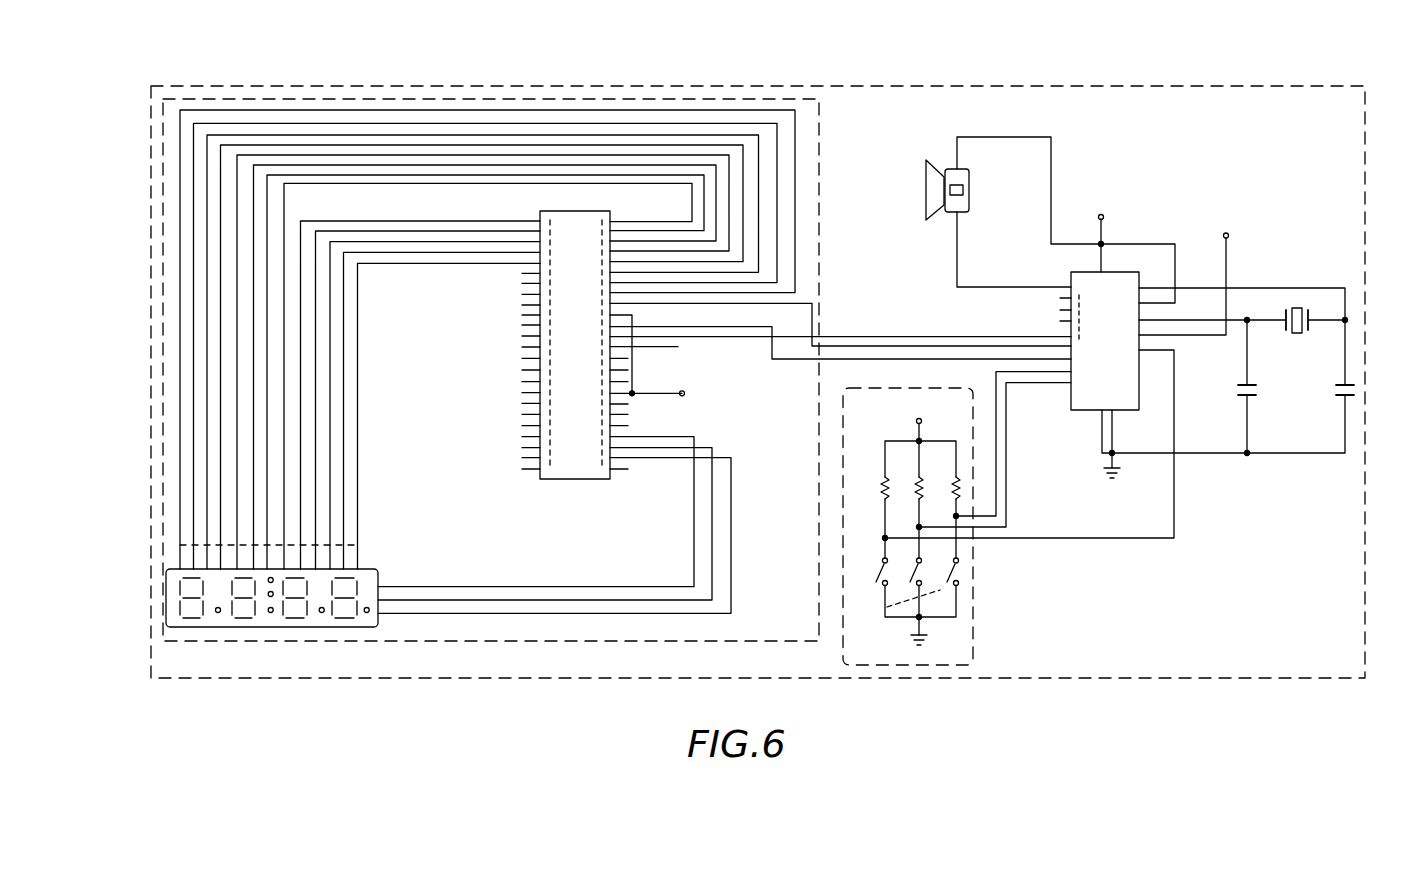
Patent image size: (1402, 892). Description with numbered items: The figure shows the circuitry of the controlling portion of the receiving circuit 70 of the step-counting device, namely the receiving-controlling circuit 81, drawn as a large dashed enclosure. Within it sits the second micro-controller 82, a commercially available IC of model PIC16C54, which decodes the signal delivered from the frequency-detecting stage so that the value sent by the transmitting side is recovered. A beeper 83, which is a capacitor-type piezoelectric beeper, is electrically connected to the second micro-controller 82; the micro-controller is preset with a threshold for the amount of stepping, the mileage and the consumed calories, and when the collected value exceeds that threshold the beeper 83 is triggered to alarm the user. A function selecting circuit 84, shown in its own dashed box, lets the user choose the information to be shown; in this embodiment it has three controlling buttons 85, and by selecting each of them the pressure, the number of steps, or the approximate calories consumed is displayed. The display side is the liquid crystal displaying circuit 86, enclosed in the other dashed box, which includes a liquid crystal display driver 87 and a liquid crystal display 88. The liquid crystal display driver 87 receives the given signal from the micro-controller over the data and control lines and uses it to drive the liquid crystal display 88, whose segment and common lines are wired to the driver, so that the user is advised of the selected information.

The receiving circuit 70 is at (888, 73).
The receiving-controlling circuit 81 is at (956, 100).
The liquid crystal displaying circuit 86 is at (810, 151).
The liquid crystal display driver 87 is at (570, 473).
The liquid crystal display 88 is at (376, 562).
The second micro-controller 82 is at (1141, 273).
The beeper 83 is at (918, 190).
The function selecting circuit 84 is at (957, 518).
The controlling buttons 85 is at (905, 588).